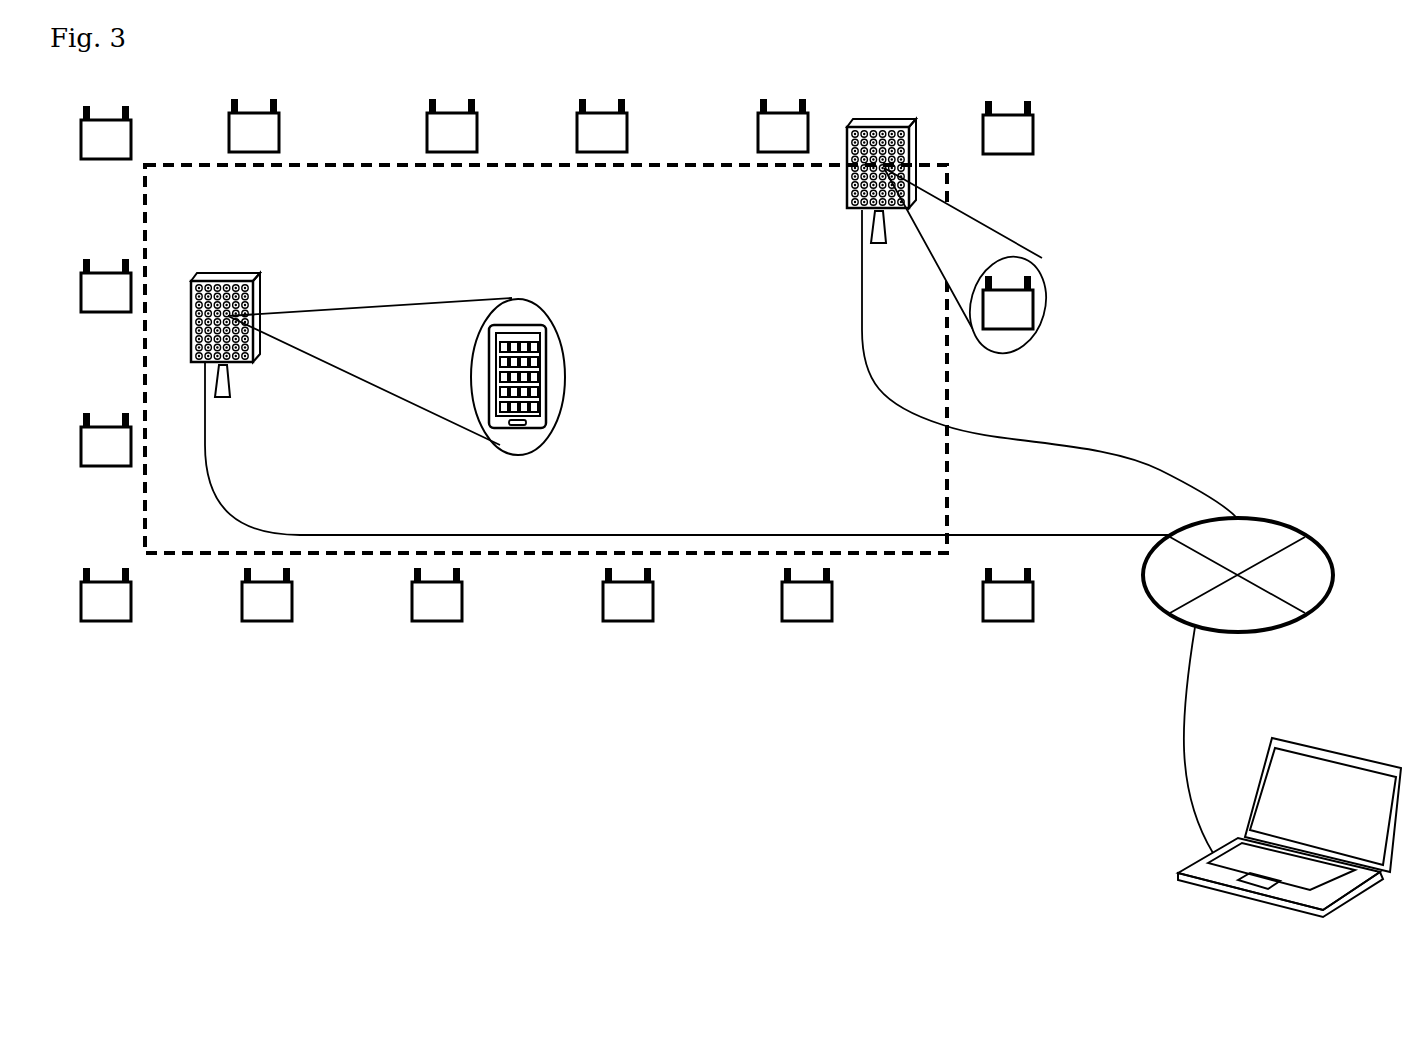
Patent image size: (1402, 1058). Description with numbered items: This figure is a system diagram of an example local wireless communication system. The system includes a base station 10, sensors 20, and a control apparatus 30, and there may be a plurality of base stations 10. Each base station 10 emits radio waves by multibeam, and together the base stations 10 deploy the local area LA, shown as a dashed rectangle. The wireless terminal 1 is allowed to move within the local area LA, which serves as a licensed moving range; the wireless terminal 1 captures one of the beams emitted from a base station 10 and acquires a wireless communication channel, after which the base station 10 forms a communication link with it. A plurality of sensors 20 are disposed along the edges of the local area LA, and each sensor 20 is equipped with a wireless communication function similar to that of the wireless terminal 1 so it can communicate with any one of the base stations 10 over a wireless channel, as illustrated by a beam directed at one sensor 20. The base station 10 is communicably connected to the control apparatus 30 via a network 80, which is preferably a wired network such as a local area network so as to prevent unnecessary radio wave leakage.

The wireless terminal 1 is at (548, 375).
The base station 10 is at (262, 292).
The sensor 20 is at (569, 392).
The control apparatus 30 is at (1358, 758).
The network 80 is at (1280, 520).
The local area LA is at (321, 163).